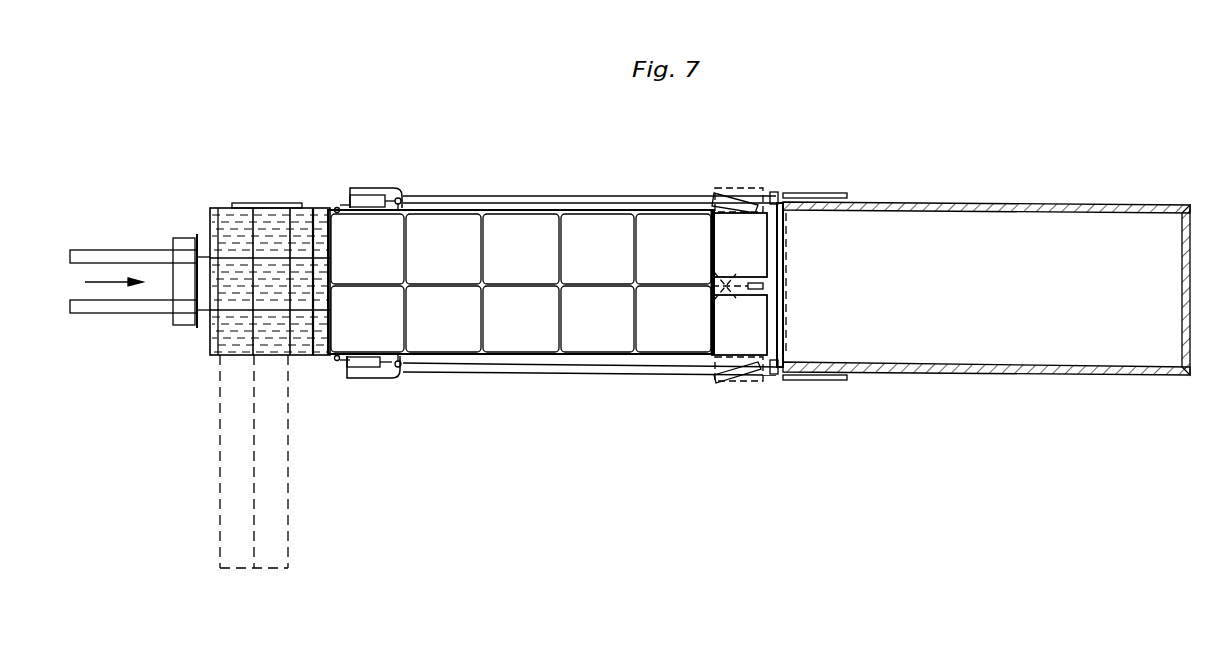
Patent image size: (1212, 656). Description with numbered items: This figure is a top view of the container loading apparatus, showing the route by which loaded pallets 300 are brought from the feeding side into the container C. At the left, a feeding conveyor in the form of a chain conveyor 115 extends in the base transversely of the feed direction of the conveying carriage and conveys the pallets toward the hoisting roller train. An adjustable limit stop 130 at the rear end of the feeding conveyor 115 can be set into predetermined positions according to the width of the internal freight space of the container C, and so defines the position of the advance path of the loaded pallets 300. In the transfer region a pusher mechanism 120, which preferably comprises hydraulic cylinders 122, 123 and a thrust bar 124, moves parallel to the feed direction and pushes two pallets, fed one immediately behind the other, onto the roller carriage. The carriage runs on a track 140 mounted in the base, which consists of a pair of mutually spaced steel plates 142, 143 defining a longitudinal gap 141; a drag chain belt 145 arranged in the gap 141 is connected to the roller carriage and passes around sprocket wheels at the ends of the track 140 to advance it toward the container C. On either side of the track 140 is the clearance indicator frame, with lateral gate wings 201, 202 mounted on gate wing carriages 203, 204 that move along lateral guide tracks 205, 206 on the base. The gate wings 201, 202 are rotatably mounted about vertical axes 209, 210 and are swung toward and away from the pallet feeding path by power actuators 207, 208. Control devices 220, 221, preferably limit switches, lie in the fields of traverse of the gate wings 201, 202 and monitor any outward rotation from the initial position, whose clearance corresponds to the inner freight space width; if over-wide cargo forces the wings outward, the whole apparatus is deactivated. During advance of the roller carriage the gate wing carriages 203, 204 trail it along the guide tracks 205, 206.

The pusher mechanism 120 is at (132, 276).
The hydraulic cylinder 122 is at (78, 250).
The hydraulic cylinder 123 is at (75, 314).
The thrust bar 124 is at (192, 238).
The adjustable limit stop 130 is at (256, 203).
The chain conveyor 115 is at (238, 467).
The gate wing 201 is at (355, 210).
The gate wing 202 is at (356, 353).
The loaded pallets 300 is at (614, 262).
The gate wing carriage 203 is at (384, 188).
The power actuator 207 is at (362, 195).
The vertical axis 209 is at (404, 197).
The control device 220 is at (336, 207).
The lateral guide track 205 is at (512, 196).
The gate wing carriage 204 is at (381, 379).
The power actuator 208 is at (360, 368).
The vertical axis 210 is at (402, 370).
The control device 221 is at (335, 361).
The lateral guide track 206 is at (512, 376).
The track 140 is at (752, 262).
The longitudinal gap 141 is at (713, 271).
The drag chain belt 145 is at (713, 299).
The steel plate 142 is at (740, 226).
The steel plate 143 is at (735, 340).
The container C is at (942, 201).